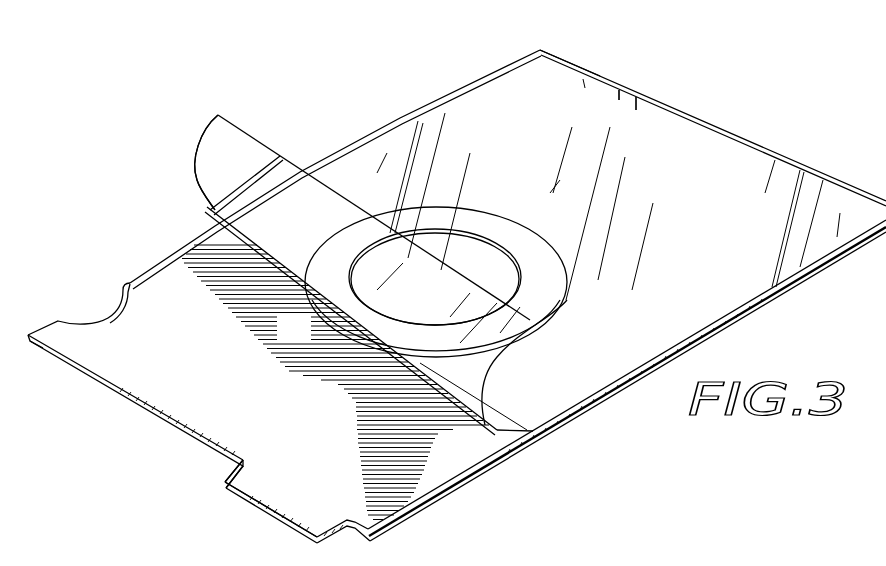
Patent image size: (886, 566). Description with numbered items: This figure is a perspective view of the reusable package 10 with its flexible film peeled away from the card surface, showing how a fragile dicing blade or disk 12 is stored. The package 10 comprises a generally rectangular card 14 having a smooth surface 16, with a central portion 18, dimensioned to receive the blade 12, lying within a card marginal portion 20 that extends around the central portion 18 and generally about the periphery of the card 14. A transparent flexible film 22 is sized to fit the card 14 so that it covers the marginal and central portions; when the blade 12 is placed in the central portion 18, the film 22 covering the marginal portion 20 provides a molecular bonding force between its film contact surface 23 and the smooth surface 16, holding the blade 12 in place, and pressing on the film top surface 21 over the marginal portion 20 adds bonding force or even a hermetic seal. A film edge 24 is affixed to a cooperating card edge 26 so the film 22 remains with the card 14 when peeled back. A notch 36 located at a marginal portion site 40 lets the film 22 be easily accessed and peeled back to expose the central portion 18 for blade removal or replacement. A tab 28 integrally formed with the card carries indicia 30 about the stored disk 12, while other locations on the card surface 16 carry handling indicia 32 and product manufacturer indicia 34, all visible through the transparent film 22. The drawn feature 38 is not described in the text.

The reusable package 10 is at (756, 115).
The dicing blade or disk 12 is at (327, 306).
The card 14 is at (503, 456).
The smooth surface 16 is at (192, 249).
The central portion 18 is at (507, 287).
The card marginal portion 20 is at (631, 240).
The film top surface 21 is at (547, 405).
The transparent flexible film 22 is at (248, 133).
The film contact surface 23 is at (219, 192).
The film edge 24 is at (543, 58).
The card edge 26 is at (563, 78).
The tab 28 is at (222, 475).
The indicia 30 is at (267, 510).
The handling indicia 32 is at (177, 381).
The product manufacturer indicia 34 is at (676, 132).
The notch 36 is at (120, 288).
The corner flap 38 is at (217, 123).
The marginal portion site 40 is at (40, 332).